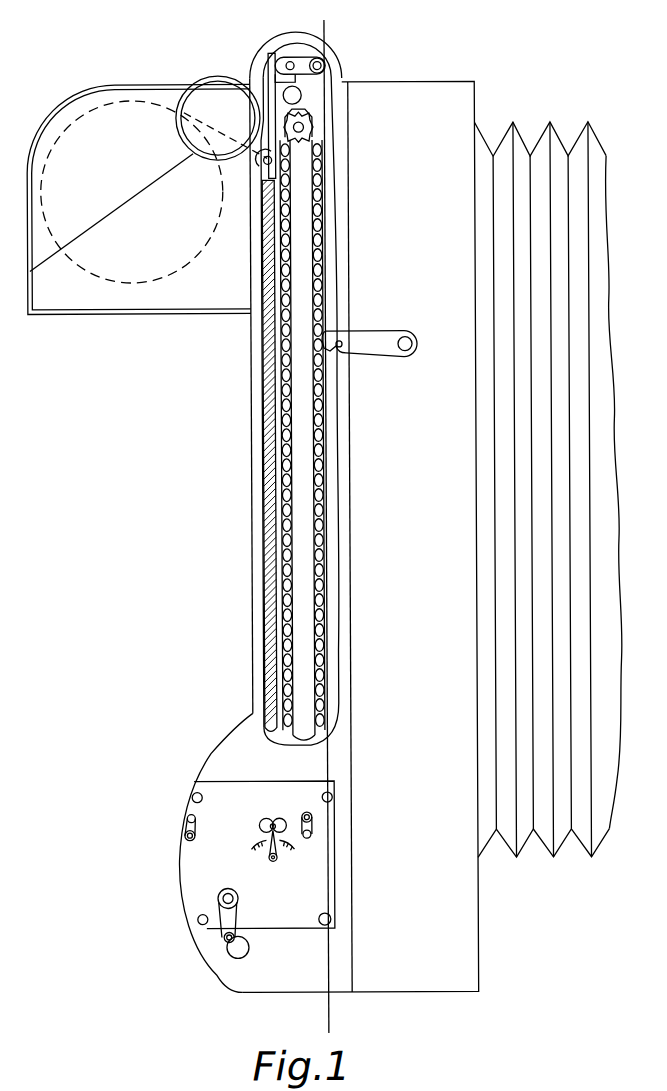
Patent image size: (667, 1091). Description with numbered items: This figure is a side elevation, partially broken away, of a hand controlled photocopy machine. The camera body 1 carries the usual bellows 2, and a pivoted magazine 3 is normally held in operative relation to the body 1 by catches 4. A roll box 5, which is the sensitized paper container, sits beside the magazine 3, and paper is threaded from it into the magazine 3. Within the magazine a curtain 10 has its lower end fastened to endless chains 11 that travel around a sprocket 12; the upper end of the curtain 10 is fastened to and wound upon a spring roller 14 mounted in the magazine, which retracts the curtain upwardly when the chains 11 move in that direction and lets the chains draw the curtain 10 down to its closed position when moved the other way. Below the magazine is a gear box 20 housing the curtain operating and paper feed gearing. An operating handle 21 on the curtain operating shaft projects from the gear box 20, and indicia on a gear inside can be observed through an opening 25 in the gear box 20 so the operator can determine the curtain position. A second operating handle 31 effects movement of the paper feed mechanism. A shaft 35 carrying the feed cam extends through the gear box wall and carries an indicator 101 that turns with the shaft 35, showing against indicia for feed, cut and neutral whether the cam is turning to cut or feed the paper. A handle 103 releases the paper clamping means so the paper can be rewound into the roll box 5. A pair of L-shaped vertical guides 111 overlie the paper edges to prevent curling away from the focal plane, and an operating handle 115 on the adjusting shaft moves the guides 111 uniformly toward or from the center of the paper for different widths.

The camera body 1 is at (467, 950).
The bellows 2 is at (592, 859).
The pivoted magazine 3 is at (222, 752).
The catches 4 is at (372, 337).
The roll box 5 is at (108, 308).
The curtain 10 is at (283, 467).
The endless chains 11 is at (286, 632).
The sprocket 12 is at (309, 126).
The spring roller 14 is at (302, 93).
The gear box 20 is at (320, 888).
The operating handle 21 is at (313, 828).
The opening 25 is at (274, 820).
The operating handle 31 is at (226, 928).
The shaft 35 is at (272, 862).
The indicator 101 is at (267, 851).
The handle 103 is at (185, 832).
The vertical guides 111 is at (270, 107).
The operating handle 115 is at (324, 62).